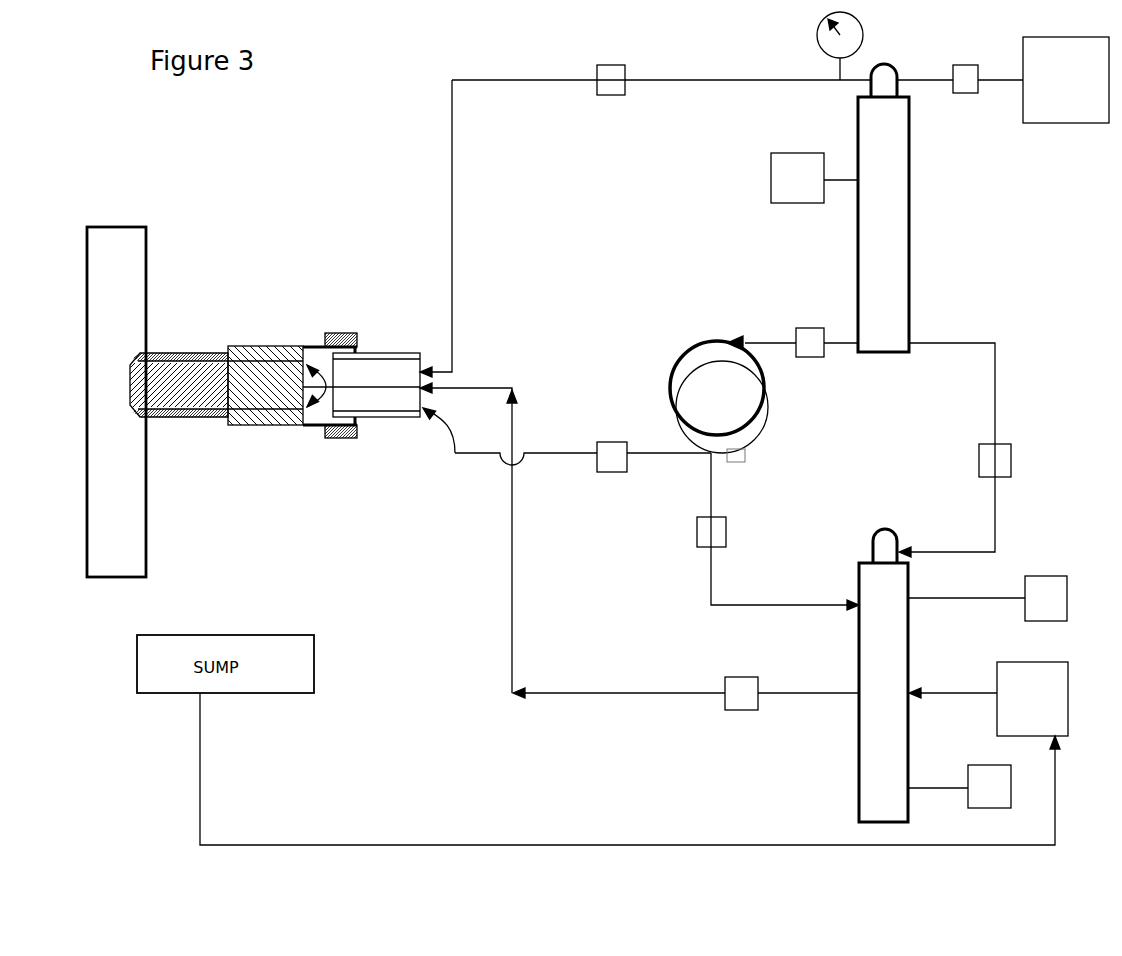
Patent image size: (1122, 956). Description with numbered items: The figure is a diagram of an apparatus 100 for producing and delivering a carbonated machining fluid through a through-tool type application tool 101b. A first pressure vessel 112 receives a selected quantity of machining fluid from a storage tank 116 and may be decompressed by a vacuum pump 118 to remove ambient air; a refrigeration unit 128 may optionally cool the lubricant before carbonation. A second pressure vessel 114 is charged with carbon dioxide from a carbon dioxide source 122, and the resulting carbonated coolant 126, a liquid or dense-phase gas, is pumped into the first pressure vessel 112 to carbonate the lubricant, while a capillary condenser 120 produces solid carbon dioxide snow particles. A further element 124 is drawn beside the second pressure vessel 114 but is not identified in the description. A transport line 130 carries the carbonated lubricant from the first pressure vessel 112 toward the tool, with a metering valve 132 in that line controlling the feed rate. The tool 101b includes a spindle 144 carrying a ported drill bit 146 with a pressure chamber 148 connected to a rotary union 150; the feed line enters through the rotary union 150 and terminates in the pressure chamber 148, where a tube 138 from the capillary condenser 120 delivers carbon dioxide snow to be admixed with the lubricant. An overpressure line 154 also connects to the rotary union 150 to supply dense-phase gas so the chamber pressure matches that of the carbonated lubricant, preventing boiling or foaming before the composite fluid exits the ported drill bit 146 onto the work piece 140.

The apparatus 100 is at (442, 48).
The application tool 101b is at (261, 336).
The first pressure vessel 112 is at (901, 640).
The second pressure vessel 114 is at (905, 190).
The storage tank 116 is at (634, 753).
The vacuum pump 118 is at (987, 598).
The capillary condenser 120 is at (718, 340).
The carbon dioxide source 122 is at (1066, 80).
The sensor 124 is at (814, 178).
The carbonated coolant 126 is at (995, 428).
The refrigeration unit 128 is at (985, 765).
The transport line 130 is at (773, 693).
The metering valve 132 is at (740, 710).
The tube 138 is at (545, 455).
The work piece 140 is at (146, 242).
The spindle 144 is at (247, 427).
The ported drill bit 146 is at (173, 353).
The pressure chamber 148 is at (378, 395).
The rotary union 150 is at (348, 333).
The overpressure line 154 is at (452, 220).